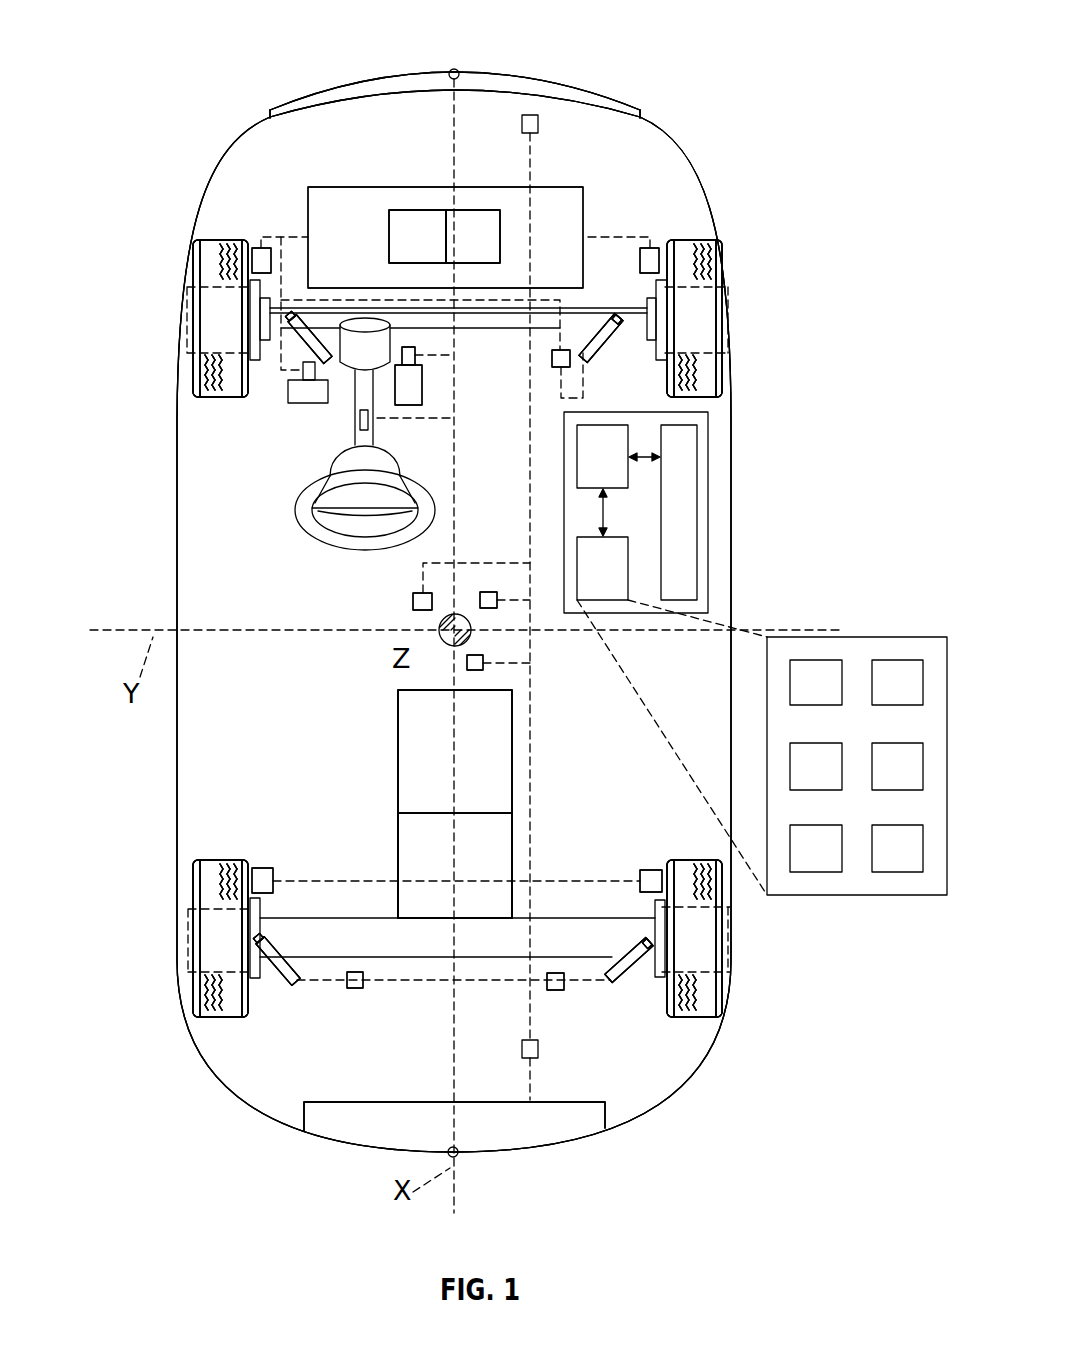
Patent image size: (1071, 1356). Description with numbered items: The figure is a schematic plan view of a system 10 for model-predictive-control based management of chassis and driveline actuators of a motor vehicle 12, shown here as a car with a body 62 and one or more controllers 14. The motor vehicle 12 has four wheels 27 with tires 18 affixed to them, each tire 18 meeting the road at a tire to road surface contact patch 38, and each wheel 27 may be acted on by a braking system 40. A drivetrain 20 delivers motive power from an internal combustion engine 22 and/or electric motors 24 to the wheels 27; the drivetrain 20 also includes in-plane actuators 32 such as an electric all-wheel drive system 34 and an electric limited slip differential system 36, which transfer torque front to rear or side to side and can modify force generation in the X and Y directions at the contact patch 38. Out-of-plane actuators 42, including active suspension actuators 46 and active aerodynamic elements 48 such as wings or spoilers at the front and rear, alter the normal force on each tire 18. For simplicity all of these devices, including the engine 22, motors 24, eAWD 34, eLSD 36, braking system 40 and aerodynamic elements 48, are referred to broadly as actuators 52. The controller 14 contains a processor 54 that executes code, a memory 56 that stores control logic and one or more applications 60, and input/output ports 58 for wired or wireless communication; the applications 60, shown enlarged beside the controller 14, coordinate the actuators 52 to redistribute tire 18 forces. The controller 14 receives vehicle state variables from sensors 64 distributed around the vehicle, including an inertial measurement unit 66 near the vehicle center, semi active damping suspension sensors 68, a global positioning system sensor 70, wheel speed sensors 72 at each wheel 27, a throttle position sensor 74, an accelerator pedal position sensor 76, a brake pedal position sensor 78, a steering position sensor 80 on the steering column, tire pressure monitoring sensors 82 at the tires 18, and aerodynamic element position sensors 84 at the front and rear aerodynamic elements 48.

The system 10 is at (174, 44).
The motor vehicle 12 is at (715, 177).
The controller 14 is at (708, 468).
The tire 18 is at (207, 335).
The drivetrain 20 is at (459, 177).
The internal combustion engine 22 is at (413, 750).
The electric motor 24 is at (585, 207).
The wheel 27 is at (457, 628).
The in-plane actuator 32 is at (430, 210).
The electric all-wheel drive system 34 is at (450, 564).
The electric limited slip differential system 36 is at (455, 564).
The tire to road surface contact patch 38 is at (188, 322).
The braking system 40 is at (258, 300).
The out-of-plane actuator 42 is at (296, 342).
The active suspension actuator 46 is at (452, 647).
The active aerodynamic element 48 is at (455, 601).
The actuator 52 is at (452, 601).
The processor 54 is at (577, 462).
The memory 56 is at (577, 557).
The input/output port 58 is at (697, 515).
The application 60 is at (818, 660).
The body 62 is at (176, 560).
The sensor 64 is at (260, 247).
The inertial measurement unit 66 is at (422, 601).
The semi active damping suspension sensor 68 is at (458, 670).
The global positioning system sensor 70 is at (488, 600).
The wheel speed sensor 72 is at (457, 570).
The throttle position sensor 74 is at (422, 392).
The accelerator pedal position sensor 76 is at (408, 376).
The brake pedal position sensor 78 is at (307, 403).
The steering position sensor 80 is at (356, 423).
The tire pressure monitoring sensor 82 is at (457, 628).
The aerodynamic element position sensor 84 is at (537, 117).